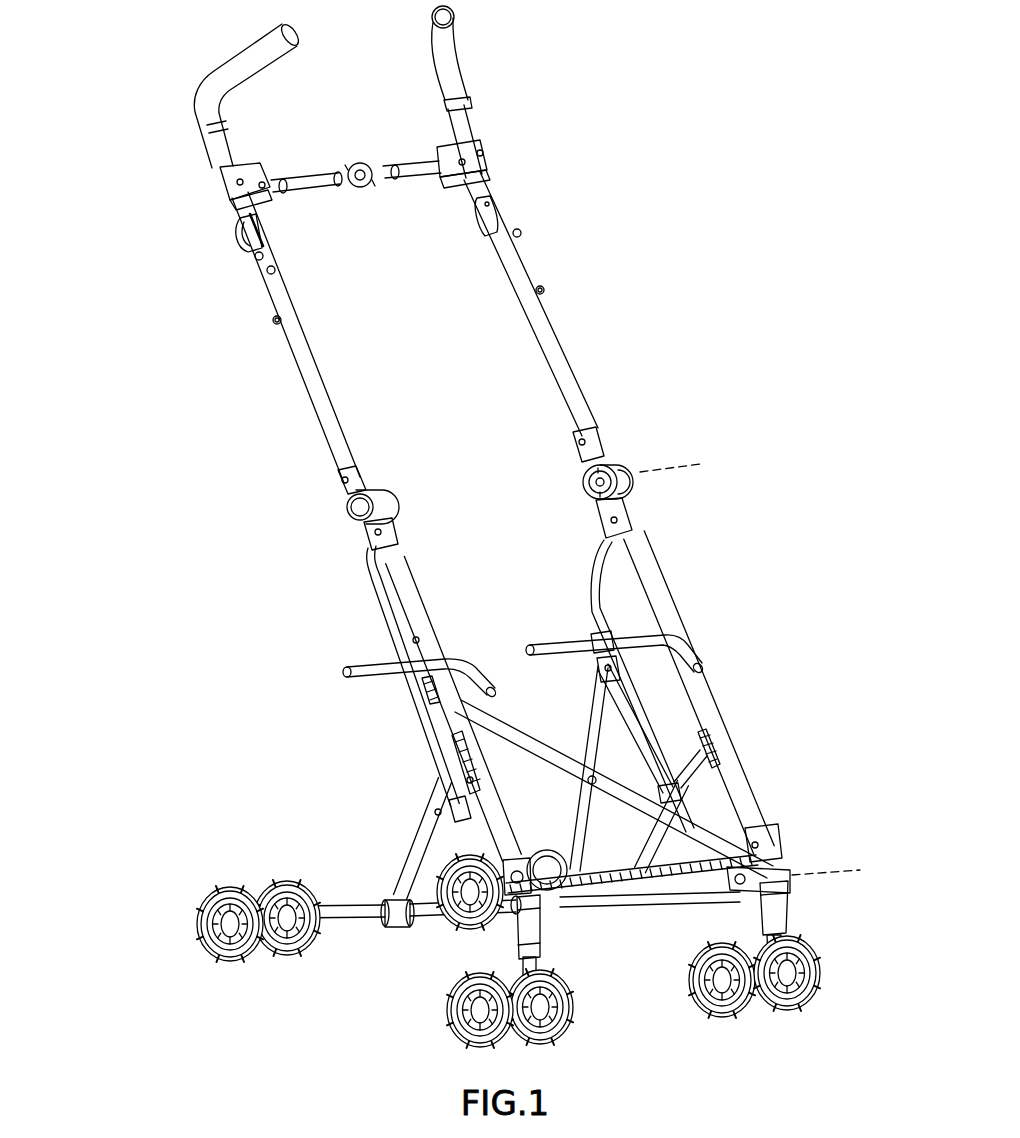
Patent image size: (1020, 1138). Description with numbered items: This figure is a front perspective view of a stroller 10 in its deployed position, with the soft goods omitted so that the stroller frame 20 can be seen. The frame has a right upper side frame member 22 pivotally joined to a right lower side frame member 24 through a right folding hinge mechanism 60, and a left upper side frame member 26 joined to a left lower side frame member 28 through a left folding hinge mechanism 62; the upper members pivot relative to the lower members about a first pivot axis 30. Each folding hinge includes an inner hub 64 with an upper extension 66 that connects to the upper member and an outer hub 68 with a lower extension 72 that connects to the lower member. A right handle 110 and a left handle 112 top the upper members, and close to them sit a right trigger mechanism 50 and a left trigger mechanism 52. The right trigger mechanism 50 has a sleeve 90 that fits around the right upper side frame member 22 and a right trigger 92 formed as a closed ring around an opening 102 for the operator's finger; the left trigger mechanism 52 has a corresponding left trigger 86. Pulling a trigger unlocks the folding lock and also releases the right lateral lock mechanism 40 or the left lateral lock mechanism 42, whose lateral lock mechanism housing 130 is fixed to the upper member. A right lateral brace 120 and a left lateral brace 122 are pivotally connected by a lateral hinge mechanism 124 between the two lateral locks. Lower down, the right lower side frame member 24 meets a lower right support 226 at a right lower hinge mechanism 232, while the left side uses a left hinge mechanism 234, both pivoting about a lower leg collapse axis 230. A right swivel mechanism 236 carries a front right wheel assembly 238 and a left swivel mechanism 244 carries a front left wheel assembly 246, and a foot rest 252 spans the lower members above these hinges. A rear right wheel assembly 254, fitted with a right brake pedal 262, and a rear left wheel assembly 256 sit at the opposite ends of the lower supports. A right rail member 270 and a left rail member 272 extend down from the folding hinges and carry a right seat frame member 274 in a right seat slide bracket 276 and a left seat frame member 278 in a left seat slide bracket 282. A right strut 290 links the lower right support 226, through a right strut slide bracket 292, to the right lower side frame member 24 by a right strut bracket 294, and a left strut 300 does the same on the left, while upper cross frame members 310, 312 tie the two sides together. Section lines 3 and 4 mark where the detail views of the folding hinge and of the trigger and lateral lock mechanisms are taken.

The stroller 10 is at (601, 65).
The stroller frame 20 is at (632, 175).
The right upper side frame member 22 is at (280, 298).
The right lower side frame member 24 is at (450, 718).
The left upper side frame member 26 is at (525, 280).
The left lower side frame member 28 is at (714, 712).
The first pivot axis 30 is at (690, 465).
The right lateral lock mechanism 40 is at (262, 155).
The left lateral lock mechanism 42 is at (440, 205).
The right trigger mechanism 50 is at (225, 258).
The left trigger mechanism 52 is at (518, 197).
The right folding hinge mechanism 60 is at (330, 512).
The left folding hinge mechanism 62 is at (622, 438).
The inner hub 64 is at (622, 488).
The upper extension 66 is at (585, 458).
The outer hub 68 is at (630, 460).
The lower extension 72 is at (602, 520).
The left trigger 86 is at (485, 232).
The sleeve 90 is at (263, 228).
The right trigger 92 is at (252, 262).
The opening 102 is at (235, 232).
The right handle 110 is at (242, 52).
The left handle 112 is at (455, 45).
The right lateral brace 120 is at (315, 182).
The left lateral brace 122 is at (415, 170).
The lateral hinge mechanism 124 is at (362, 163).
The lateral lock mechanism housing 130 is at (468, 150).
The lower right support 226 is at (352, 919).
The lower leg collapse axis 230 is at (805, 872).
The right lower hinge mechanism 232 is at (545, 930).
The left hinge mechanism 234 is at (778, 908).
The right swivel mechanism 236 is at (560, 1005).
The front right wheel assembly 238 is at (470, 1038).
The left swivel mechanism 244 is at (778, 975).
The front left wheel assembly 246 is at (800, 1003).
The foot rest 252 is at (618, 888).
The rear right wheel assembly 254 is at (250, 960).
The rear left wheel assembly 256 is at (542, 850).
The right brake pedal 262 is at (245, 868).
The right rail member 270 is at (385, 622).
The left rail member 272 is at (585, 594).
The right seat frame member 274 is at (372, 668).
The right seat slide bracket 276 is at (420, 690).
The left seat frame member 278 is at (550, 645).
The left seat slide bracket 282 is at (600, 666).
The right strut 290 is at (428, 842).
The right strut slide bracket 292 is at (403, 928).
The right strut bracket 294 is at (455, 776).
The left strut 300 is at (680, 805).
The upper cross frame member 310 is at (535, 745).
The upper cross frame member 312 is at (598, 738).
The section line 3 is at (632, 418).
The section line 4 is at (228, 162).